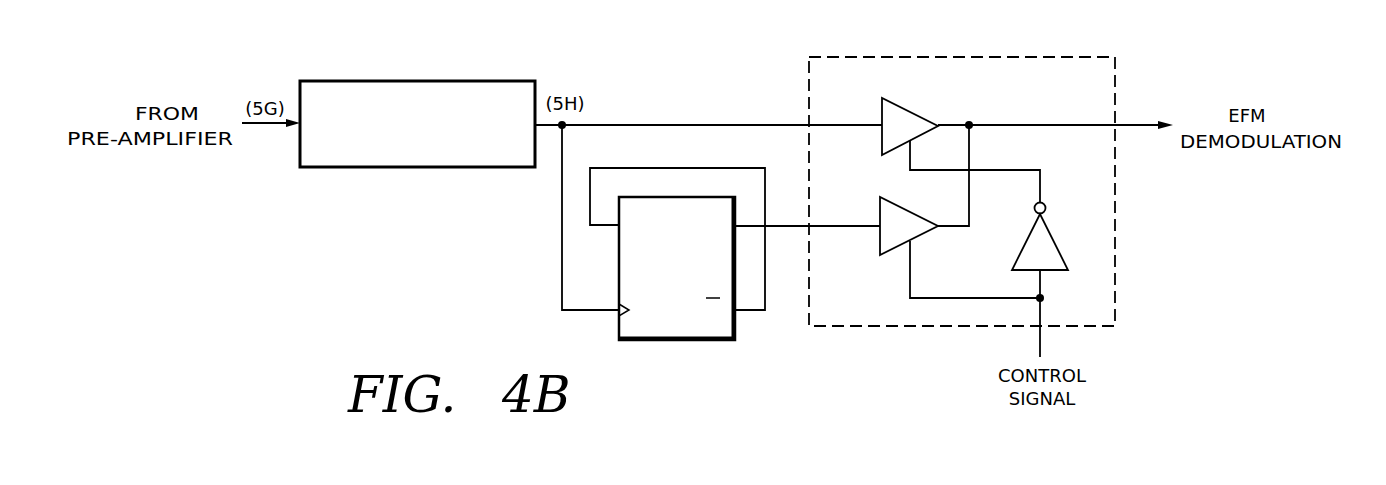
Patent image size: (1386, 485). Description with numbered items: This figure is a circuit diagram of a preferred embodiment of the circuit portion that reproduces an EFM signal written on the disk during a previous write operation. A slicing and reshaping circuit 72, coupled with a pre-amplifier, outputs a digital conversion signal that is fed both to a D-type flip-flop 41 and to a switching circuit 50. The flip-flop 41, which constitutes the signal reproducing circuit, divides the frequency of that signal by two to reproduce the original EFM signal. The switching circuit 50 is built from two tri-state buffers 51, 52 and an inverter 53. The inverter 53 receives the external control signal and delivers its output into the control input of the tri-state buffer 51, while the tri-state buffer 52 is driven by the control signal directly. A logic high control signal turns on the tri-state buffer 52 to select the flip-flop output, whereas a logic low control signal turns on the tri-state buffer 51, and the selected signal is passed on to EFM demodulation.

The slicing and reshaping circuit 72 is at (400, 80).
The D-type flip-flop 41 is at (678, 341).
The switching circuit 50 is at (1116, 226).
The tri-state buffer 51 is at (906, 109).
The tri-state buffer 52 is at (878, 210).
The inverter 53 is at (1056, 237).